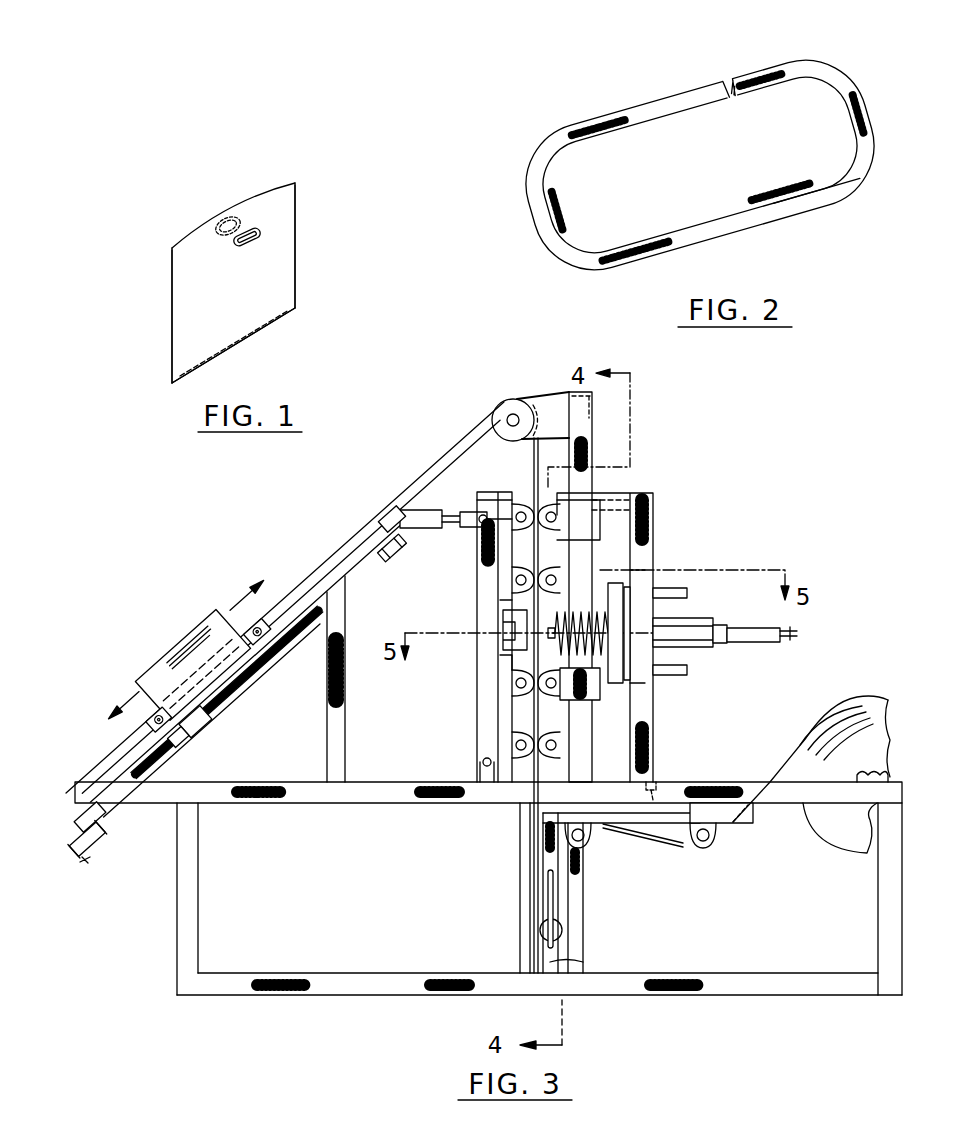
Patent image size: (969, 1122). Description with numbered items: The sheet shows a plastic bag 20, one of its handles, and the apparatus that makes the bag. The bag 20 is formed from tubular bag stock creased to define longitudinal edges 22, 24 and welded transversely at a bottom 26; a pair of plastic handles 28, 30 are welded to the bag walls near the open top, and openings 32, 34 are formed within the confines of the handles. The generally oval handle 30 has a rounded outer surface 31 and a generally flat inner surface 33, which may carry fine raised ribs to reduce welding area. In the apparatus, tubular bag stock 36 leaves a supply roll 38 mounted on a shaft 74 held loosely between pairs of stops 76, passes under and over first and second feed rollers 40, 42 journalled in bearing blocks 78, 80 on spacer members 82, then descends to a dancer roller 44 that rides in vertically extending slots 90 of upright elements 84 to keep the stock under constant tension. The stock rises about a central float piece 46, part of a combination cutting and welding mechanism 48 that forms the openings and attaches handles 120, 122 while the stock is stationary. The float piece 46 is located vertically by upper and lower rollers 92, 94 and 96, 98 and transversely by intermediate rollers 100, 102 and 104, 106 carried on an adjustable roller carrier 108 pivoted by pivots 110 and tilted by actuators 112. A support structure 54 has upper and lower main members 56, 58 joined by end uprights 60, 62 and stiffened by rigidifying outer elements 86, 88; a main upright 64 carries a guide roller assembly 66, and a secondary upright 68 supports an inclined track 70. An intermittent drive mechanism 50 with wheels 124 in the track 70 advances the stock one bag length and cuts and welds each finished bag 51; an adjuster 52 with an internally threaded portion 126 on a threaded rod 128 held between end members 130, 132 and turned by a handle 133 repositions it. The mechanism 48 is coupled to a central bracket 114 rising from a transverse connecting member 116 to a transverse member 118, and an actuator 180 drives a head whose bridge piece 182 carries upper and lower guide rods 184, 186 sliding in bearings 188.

In FIG. 1, the plastic bag 20 is at (297, 270).
In FIG. 1, the longitudinal edge 22 is at (172, 300).
In FIG. 1, the longitudinal edge 24 is at (297, 295).
In FIG. 1, the bottom 26 is at (270, 324).
In FIG. 1, the plastic handle 28 is at (238, 212).
In FIG. 1, the plastic handle 30 is at (272, 225).
In FIG. 2, the plastic handle 30 is at (557, 151).
In FIG. 2, the rounded outer surface 31 is at (810, 200).
In FIG. 1, the opening 32 is at (222, 222).
In FIG. 2, the flat inner surface 33 is at (731, 82).
In FIG. 1, the opening 34 is at (262, 236).
In FIG. 3, the tubular bag stock 36 is at (770, 782).
In FIG. 3, the supply roll 38 is at (888, 745).
In FIG. 3, the first feed roller 40 is at (718, 840).
In FIG. 3, the second feed roller 42 is at (590, 843).
In FIG. 3, the dancer roller 44 is at (562, 937).
In FIG. 3, the central float piece 46 is at (532, 717).
In FIG. 3, the combination cutting and welding mechanism 48 is at (757, 550).
In FIG. 3, the intermittent drive mechanism 50 is at (172, 645).
In FIG. 3, the finished bag 51 is at (90, 760).
In FIG. 3, the adjuster 52 is at (214, 725).
In FIG. 3, the support structure 54 is at (695, 487).
In FIG. 3, the upper main member 56 is at (342, 793).
In FIG. 3, the lower main member 58 is at (280, 973).
In FIG. 3, the end upright 60 is at (190, 930).
In FIG. 3, the end upright 62 is at (890, 880).
In FIG. 3, the main upright 64 is at (576, 450).
In FIG. 3, the guide roller assembly 66 is at (505, 399).
In FIG. 3, the secondary upright 68 is at (346, 735).
In FIG. 3, the inclined track 70 is at (360, 532).
In FIG. 3, the shaft 74 is at (880, 768).
In FIG. 3, the stops 76 is at (860, 803).
In FIG. 3, the bearing block 78 is at (703, 850).
In FIG. 3, the bearing block 80 is at (592, 838).
In FIG. 3, the spacer member 82 is at (678, 848).
In FIG. 3, the upright element 84 is at (583, 960).
In FIG. 3, the rigidifying outer element 86 is at (530, 910).
In FIG. 3, the rigidifying outer element 88 is at (560, 900).
In FIG. 3, the vertically extending slot 90 is at (549, 880).
In FIG. 3, the upper roller 92 is at (525, 505).
In FIG. 3, the upper roller 94 is at (640, 518).
In FIG. 3, the lower roller 96 is at (473, 785).
In FIG. 3, the lower roller 98 is at (507, 783).
In FIG. 3, the intermediate roller 100 is at (507, 560).
In FIG. 3, the intermediate roller 102 is at (560, 525).
In FIG. 3, the intermediate roller 104 is at (507, 708).
In FIG. 3, the intermediate roller 106 is at (557, 712).
In FIG. 3, the adjustable roller carrier 108 is at (476, 672).
In FIG. 3, the pivot 110 is at (483, 762).
In FIG. 3, the actuator 112 is at (413, 510).
In FIG. 3, the central bracket 114 is at (640, 742).
In FIG. 3, the transverse connecting member 116 is at (658, 785).
In FIG. 3, the transverse member 118 is at (605, 502).
In FIG. 3, the handle 120 is at (505, 613).
In FIG. 3, the handle 122 is at (503, 657).
In FIG. 3, the wheel 124 is at (255, 622).
In FIG. 3, the internally threaded portion 126 is at (200, 735).
In FIG. 3, the elongated threaded rod 128 is at (258, 666).
In FIG. 3, the end member 130 is at (105, 822).
In FIG. 3, the end member 132 is at (400, 556).
In FIG. 3, the handle 133 is at (100, 858).
In FIG. 3, the actuator 180 is at (687, 623).
In FIG. 3, the bridge piece 182 is at (618, 686).
In FIG. 3, the upper guide rod 184 is at (673, 592).
In FIG. 3, the lower guide rod 186 is at (688, 672).
In FIG. 3, the bearing 188 is at (630, 570).